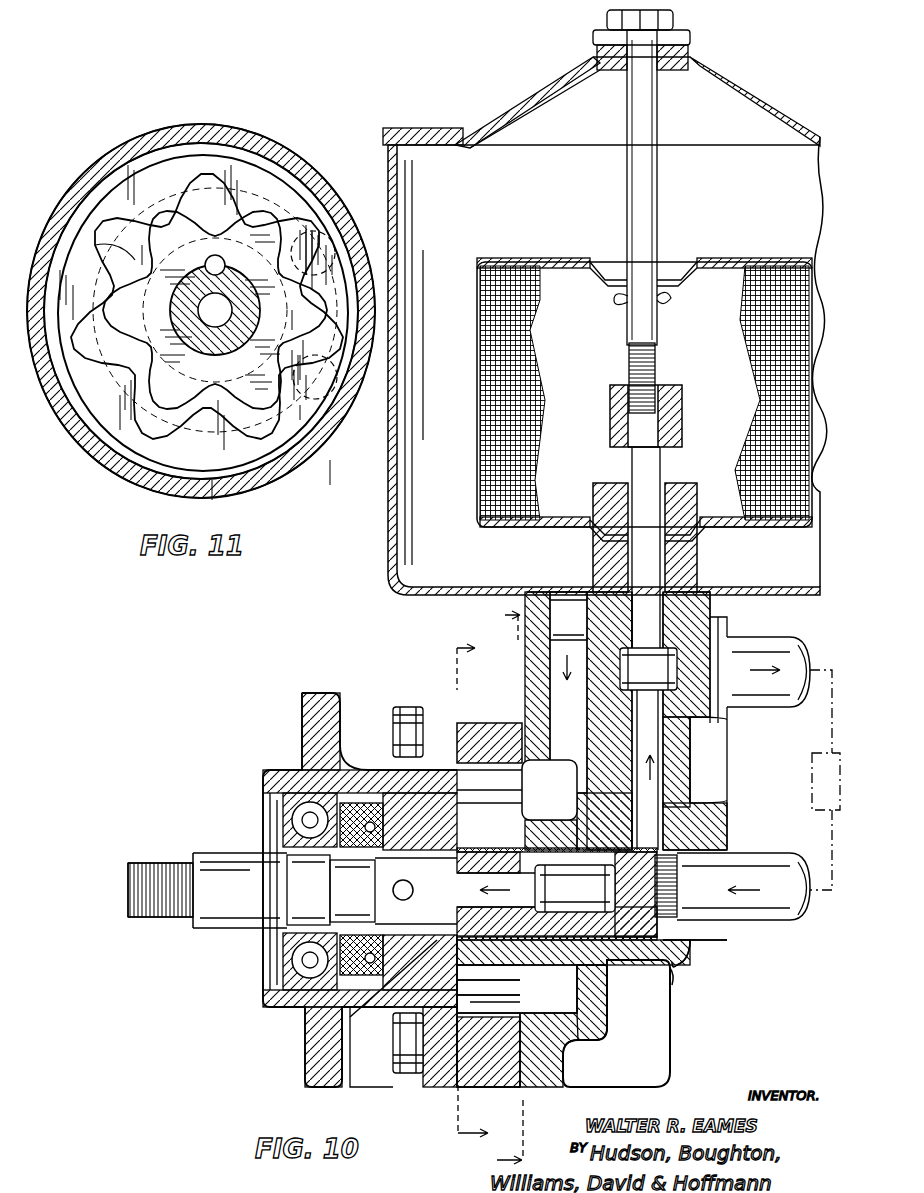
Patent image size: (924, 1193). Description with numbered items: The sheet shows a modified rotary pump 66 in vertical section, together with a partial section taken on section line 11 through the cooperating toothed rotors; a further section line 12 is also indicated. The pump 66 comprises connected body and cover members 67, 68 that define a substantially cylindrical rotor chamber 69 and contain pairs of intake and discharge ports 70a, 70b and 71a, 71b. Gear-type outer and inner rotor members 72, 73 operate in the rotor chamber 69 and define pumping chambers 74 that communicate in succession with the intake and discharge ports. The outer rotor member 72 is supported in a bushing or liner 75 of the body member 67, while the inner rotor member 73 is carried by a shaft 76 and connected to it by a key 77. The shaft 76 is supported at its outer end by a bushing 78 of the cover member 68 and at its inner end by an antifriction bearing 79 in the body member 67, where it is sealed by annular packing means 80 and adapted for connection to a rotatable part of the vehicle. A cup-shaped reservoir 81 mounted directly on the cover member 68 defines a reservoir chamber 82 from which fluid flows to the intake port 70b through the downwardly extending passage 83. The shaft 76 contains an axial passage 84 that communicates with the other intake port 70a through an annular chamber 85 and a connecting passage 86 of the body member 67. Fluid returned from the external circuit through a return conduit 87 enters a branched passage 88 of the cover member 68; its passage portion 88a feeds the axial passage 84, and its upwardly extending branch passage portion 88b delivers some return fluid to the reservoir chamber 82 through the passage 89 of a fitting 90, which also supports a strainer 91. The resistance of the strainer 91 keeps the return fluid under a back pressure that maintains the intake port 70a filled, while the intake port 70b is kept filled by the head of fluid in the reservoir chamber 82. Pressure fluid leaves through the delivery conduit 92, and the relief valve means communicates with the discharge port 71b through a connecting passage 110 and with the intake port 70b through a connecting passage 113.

In FIG. 10, the section line 11— 11 is at (485, 891).
In FIG. 10, the section line 12— 12 is at (496, 892).
In FIG. 10, the rotary pump 66 is at (688, 1039).
In FIG. 11, the body member 67 is at (292, 185).
In FIG. 10, the body member 67 is at (372, 1012).
In FIG. 10, the cover member 68 is at (585, 1050).
In FIG. 11, the rotor chamber 69 is at (240, 185).
In FIG. 10, the rotor chamber 69 is at (436, 1085).
In FIG. 10, the intake port 70a is at (400, 768).
In FIG. 10, the intake port 70b is at (565, 782).
In FIG. 10, the discharge port 71a is at (370, 1013).
In FIG. 10, the discharge port 71b is at (588, 1003).
In FIG. 11, the outer rotor member 72 is at (185, 155).
In FIG. 10, the outer rotor member 72 is at (464, 720).
In FIG. 10, the inner rotor member 73 is at (550, 768).
In FIG. 11, the pumping chambers 74 is at (197, 212).
In FIG. 11, the bushing or liner 75 is at (130, 237).
In FIG. 10, the bushing or liner 75 is at (490, 1008).
In FIG. 11, the shaft 76 is at (262, 318).
In FIG. 10, the shaft 76 is at (490, 966).
In FIG. 11, the key 77 is at (205, 262).
In FIG. 10, the key 77 is at (413, 890).
In FIG. 10, the bushing 78 is at (566, 828).
In FIG. 10, the antifriction bearing 79 is at (290, 1008).
In FIG. 10, the annular packing means 80 is at (345, 915).
In FIG. 10, the reservoir 81 is at (388, 490).
In FIG. 10, the reservoir chamber 82 is at (405, 522).
In FIG. 10, the downwardly extending passage 83 is at (572, 730).
In FIG. 10, the axial passage 84 is at (485, 898).
In FIG. 10, the annular chamber 85 is at (330, 808).
In FIG. 10, the connecting passage 86 is at (422, 824).
In FIG. 10, the return conduit 87 is at (780, 925).
In FIG. 11, the branched passage 88 is at (220, 335).
In FIG. 10, the branched passage 88 is at (695, 952).
In FIG. 10, the passage portion 88a is at (680, 980).
In FIG. 10, the branch passage portion 88b is at (690, 840).
In FIG. 10, the passage 89 is at (655, 545).
In FIG. 10, the fitting 90 is at (600, 548).
In FIG. 10, the strainer 91 is at (482, 390).
In FIG. 10, the delivery conduit 92 is at (760, 698).
In FIG. 11, the connecting passage 110 is at (315, 370).
In FIG. 11, the connecting passage 113 is at (325, 240).